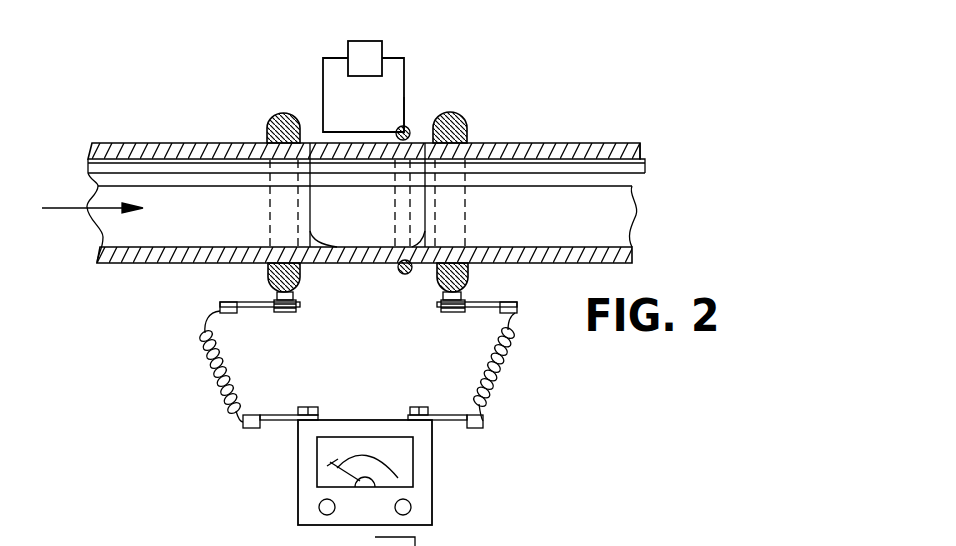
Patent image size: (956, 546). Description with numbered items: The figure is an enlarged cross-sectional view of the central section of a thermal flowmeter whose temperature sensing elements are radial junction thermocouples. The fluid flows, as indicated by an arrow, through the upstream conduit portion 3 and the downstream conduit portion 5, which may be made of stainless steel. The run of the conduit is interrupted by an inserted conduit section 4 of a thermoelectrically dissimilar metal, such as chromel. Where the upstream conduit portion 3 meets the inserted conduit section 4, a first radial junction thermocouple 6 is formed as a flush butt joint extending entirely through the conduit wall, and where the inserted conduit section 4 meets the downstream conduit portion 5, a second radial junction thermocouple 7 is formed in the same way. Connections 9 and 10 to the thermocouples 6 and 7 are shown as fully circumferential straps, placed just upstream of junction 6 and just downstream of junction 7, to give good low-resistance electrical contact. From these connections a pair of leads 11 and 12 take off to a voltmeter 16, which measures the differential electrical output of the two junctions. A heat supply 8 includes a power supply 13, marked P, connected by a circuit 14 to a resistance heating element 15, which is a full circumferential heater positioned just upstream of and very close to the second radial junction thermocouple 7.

The upstream conduit portion 3 is at (165, 143).
The inserted conduit section 4 is at (318, 143).
The downstream conduit portion 5 is at (580, 143).
The first radial junction thermocouple 6 is at (337, 261).
The second radial junction thermocouple 7 is at (415, 264).
The heat supply 8 is at (411, 50).
The connection to first thermocouple 9 is at (267, 128).
The connection to second thermocouple 10 is at (467, 118).
The lead 11 is at (212, 358).
The lead 12 is at (506, 365).
The power supply 13 is at (353, 41).
The circuit 14 is at (404, 97).
The resistance heating element 15 is at (410, 127).
The voltmeter 16 is at (445, 478).